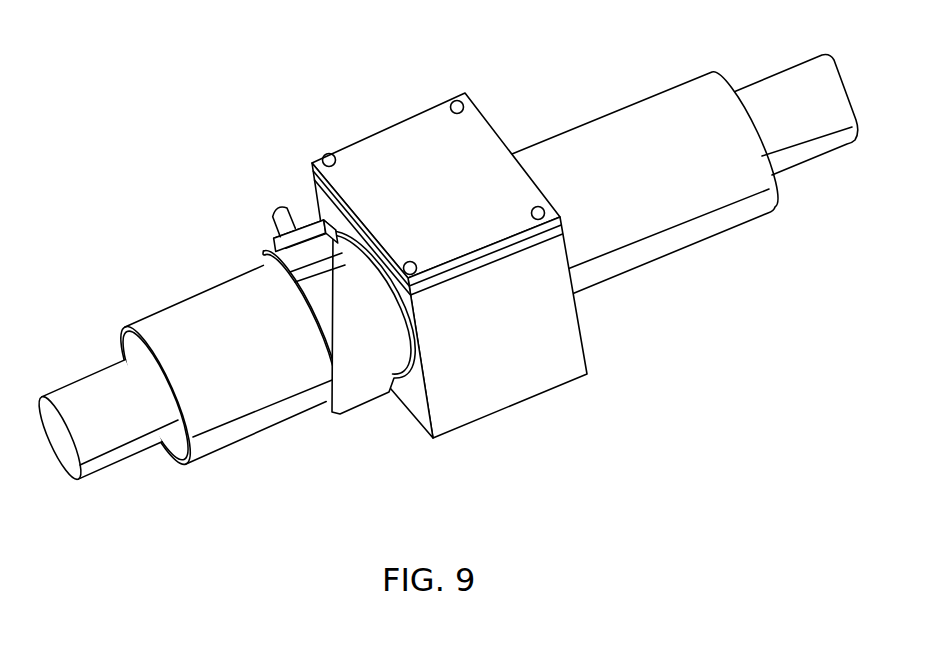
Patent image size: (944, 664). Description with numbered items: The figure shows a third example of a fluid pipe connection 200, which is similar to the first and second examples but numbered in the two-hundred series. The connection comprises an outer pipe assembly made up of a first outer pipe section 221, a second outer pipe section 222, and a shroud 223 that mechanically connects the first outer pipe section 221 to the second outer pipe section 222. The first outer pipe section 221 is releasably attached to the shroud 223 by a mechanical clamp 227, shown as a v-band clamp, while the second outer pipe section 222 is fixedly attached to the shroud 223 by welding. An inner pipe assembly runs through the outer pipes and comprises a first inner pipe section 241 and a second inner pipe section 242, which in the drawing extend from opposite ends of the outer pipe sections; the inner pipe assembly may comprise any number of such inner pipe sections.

The fluid pipe connection 200 is at (445, 273).
The first outer pipe section 221 is at (256, 385).
The second outer pipe section 222 is at (605, 240).
The shroud 223 is at (542, 368).
The mechanical clamp 227 is at (293, 247).
The first inner pipe section 241 is at (110, 436).
The second inner pipe section 242 is at (794, 102).